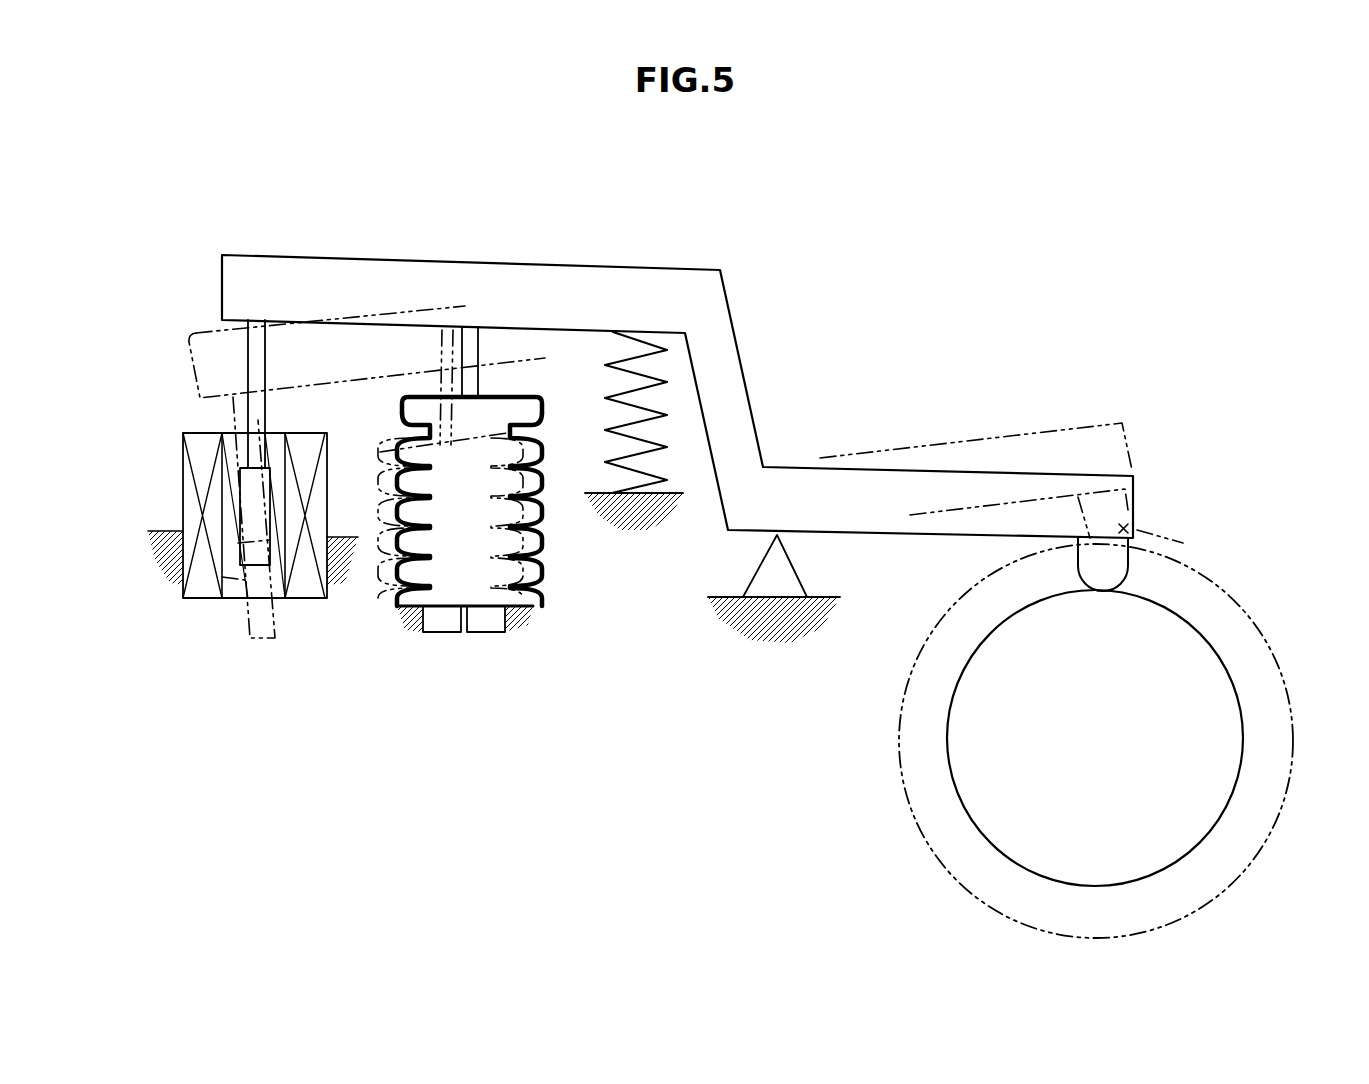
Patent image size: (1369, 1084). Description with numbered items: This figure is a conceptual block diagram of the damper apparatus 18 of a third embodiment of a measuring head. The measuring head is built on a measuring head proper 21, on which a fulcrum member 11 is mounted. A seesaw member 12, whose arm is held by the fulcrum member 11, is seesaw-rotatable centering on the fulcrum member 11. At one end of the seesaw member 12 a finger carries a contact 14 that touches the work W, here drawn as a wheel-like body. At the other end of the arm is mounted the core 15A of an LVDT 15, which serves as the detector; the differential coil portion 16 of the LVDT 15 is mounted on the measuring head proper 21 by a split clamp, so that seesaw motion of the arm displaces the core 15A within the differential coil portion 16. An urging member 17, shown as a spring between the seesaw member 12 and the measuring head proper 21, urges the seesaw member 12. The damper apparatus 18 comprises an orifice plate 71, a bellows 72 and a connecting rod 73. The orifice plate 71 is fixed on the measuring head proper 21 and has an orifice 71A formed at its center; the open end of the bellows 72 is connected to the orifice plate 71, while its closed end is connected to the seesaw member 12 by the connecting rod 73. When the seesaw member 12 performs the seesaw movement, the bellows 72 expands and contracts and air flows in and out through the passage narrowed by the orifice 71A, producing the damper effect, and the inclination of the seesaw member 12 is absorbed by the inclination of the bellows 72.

The fulcrum member 11 is at (788, 580).
The seesaw member 12 is at (685, 287).
The contact 14 is at (1117, 560).
The LVDT (differential transformer) 15 is at (207, 487).
The core 15A is at (253, 517).
The differential coil portion 16 is at (197, 578).
The urging member 17 is at (653, 407).
The damper apparatus 18 is at (450, 599).
The measuring head proper 21 is at (528, 625).
The orifice plate 71 is at (439, 626).
The orifice 71A is at (490, 684).
The bellows 72 is at (533, 584).
The connecting rod 73 is at (473, 343).
The work W is at (1220, 752).